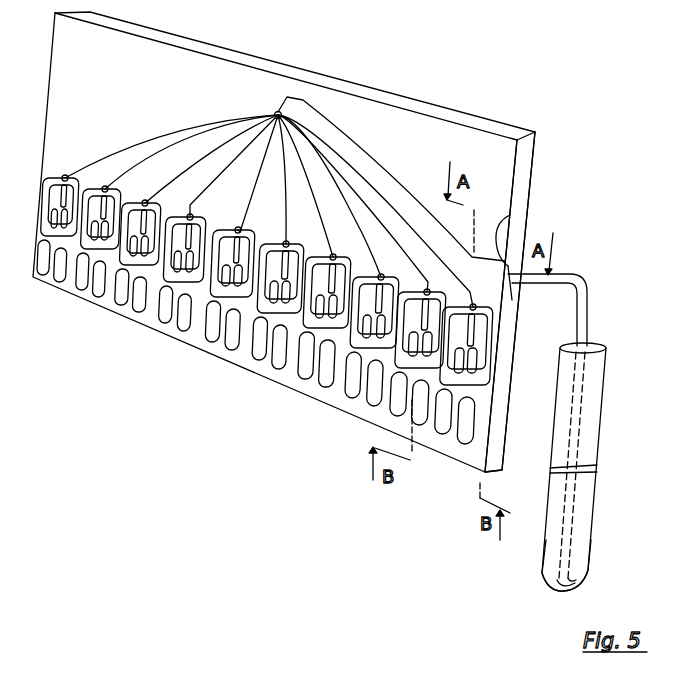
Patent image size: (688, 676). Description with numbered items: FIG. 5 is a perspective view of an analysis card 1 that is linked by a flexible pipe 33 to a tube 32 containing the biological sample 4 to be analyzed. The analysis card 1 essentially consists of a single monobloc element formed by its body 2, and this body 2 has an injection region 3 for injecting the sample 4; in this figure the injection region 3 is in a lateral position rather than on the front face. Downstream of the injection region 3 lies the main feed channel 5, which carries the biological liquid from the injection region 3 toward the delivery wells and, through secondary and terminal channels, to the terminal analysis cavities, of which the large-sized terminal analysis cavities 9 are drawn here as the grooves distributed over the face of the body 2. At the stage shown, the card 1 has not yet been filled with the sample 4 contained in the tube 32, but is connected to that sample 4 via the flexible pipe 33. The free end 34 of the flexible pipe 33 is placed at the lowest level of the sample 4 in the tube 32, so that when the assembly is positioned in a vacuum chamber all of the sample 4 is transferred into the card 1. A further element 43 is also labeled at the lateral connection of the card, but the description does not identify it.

The analysis card 1 is at (421, 144).
The body 2 is at (525, 162).
The injection region 3 is at (510, 215).
The main feed channel 5 is at (343, 127).
The large-sized terminal analysis cavities 9 is at (250, 357).
The outlet connection 43 is at (512, 300).
The flexible pipe 33 is at (587, 310).
The biological sample 4 is at (553, 515).
The tube 32 is at (540, 560).
The free end 34 is at (560, 590).